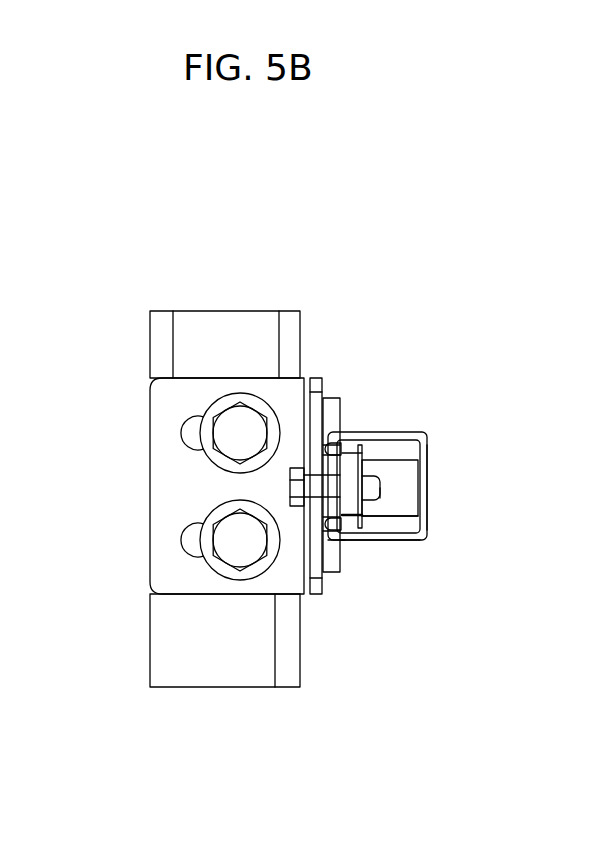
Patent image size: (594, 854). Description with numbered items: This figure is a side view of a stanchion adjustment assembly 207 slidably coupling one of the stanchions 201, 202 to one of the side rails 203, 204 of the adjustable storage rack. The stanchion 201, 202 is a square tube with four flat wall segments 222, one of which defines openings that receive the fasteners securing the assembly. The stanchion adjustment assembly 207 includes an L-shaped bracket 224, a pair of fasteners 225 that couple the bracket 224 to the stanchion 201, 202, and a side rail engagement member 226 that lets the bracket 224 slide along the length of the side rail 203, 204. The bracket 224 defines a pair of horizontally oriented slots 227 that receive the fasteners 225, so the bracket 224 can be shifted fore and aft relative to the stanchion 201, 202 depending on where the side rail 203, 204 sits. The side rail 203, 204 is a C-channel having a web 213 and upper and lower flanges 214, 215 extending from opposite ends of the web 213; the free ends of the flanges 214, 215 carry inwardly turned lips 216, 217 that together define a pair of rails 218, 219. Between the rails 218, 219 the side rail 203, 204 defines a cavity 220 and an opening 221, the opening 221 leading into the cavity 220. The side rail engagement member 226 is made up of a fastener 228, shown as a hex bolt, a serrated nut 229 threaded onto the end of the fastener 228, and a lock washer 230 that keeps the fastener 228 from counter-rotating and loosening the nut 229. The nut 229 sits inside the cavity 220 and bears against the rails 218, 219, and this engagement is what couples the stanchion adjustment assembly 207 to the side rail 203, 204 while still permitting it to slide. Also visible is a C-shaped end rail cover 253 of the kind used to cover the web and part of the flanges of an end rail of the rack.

The stanchion 201 is at (225, 452).
The stanchion 202 is at (220, 337).
The side rail 203 is at (418, 427).
The side rail 204 is at (405, 437).
The stanchion adjustment assembly 207 is at (183, 582).
The web 213 is at (407, 473).
The upper flange 214 is at (378, 440).
The lower flange 215 is at (393, 535).
The inwardly turned lip 216 is at (333, 437).
The inwardly turned lip 217 is at (340, 543).
The rail 218 is at (428, 445).
The rail 219 is at (365, 517).
The cavity 220 is at (385, 461).
The opening 221 is at (330, 428).
The wall segment 222 is at (257, 333).
The bracket 224 is at (215, 585).
The fasteners 225 is at (240, 542).
The side rail engagement member 226 is at (387, 500).
The openings 227 is at (180, 422).
The fastener 228 is at (290, 478).
The nut 229 is at (348, 496).
The lock washer 230 is at (305, 508).
The end rail cover 253 is at (392, 432).